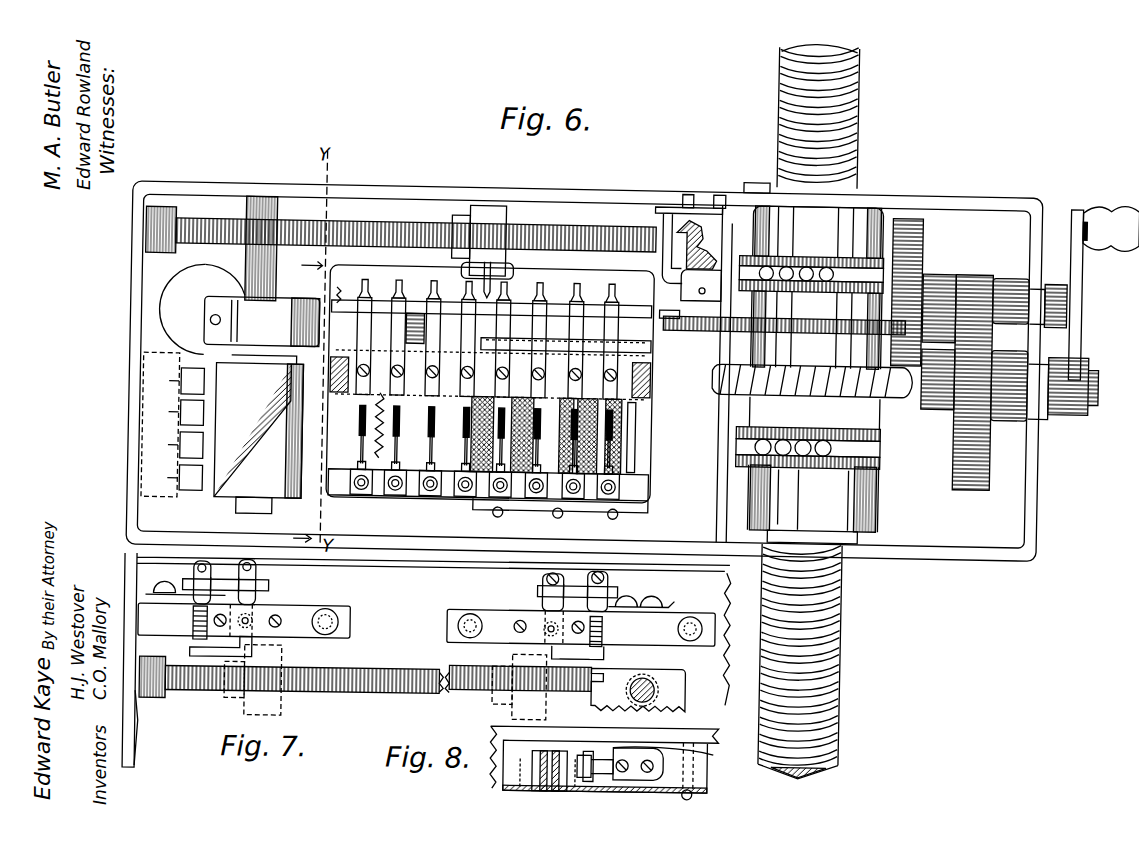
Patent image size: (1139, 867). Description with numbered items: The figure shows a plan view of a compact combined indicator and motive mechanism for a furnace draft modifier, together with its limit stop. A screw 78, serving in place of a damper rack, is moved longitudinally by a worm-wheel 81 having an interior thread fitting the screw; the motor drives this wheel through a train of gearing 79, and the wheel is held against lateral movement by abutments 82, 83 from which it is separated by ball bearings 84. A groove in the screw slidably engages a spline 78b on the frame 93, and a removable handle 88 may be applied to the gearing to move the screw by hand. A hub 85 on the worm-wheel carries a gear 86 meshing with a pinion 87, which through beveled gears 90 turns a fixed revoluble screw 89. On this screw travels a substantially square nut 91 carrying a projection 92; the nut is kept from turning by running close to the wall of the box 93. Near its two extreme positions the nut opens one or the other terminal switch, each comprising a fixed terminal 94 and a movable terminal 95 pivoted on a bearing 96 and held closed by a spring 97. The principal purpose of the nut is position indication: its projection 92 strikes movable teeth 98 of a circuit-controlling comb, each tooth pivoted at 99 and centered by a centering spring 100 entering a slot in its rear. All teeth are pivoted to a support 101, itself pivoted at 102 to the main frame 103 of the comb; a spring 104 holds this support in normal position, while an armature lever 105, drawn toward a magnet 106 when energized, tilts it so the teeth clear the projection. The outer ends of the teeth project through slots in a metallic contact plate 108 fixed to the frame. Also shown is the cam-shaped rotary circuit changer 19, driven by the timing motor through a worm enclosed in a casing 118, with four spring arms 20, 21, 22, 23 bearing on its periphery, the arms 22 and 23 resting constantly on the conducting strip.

In FIG. 6, the rotary circuit changer 19 is at (259, 435).
In FIG. 6, the spring arm 20 is at (210, 487).
In FIG. 6, the spring arm 21 is at (148, 460).
In FIG. 6, the spring arm 22 is at (148, 426).
In FIG. 6, the spring arm 23 is at (142, 357).
In FIG. 6, the screw 78 is at (848, 138).
In FIG. 6, the spline 78b is at (746, 179).
In FIG. 6, the train of gearing 79 is at (924, 252).
In FIG. 6, the worm-wheel 81 is at (713, 390).
In FIG. 6, the abutment 82 is at (870, 260).
In FIG. 6, the abutment 83 is at (874, 460).
In FIG. 6, the ball bearings 84 is at (766, 268).
In FIG. 6, the hub 85 is at (815, 375).
In FIG. 6, the gear 86 is at (754, 318).
In FIG. 6, the pinion 87 is at (664, 305).
In FIG. 6, the removable handle 88 is at (1078, 331).
In FIG. 6, the fixed revoluble screw 89 is at (565, 216).
In FIG. 7, the fixed revoluble screw 89 is at (354, 692).
In FIG. 6, the beveled gears 90 is at (690, 234).
In FIG. 6, the nut 91 is at (490, 212).
In FIG. 7, the nut 91 is at (280, 660).
In FIG. 6, the projection 92 is at (487, 287).
In FIG. 6, the frame 93 is at (405, 195).
In FIG. 7, the fixed terminal 94 is at (180, 581).
In FIG. 8, the fixed terminal 94 is at (696, 755).
In FIG. 7, the movable terminal 95 is at (262, 570).
In FIG. 8, the bearing 96 is at (535, 772).
In FIG. 7, the spring 97 is at (192, 642).
In FIG. 6, the movable teeth 98 is at (400, 300).
In FIG. 6, the pivot 99 is at (363, 370).
In FIG. 6, the centering spring 100 is at (428, 446).
In FIG. 6, the support 101 is at (626, 420).
In FIG. 6, the pivot 102 is at (622, 390).
In FIG. 6, the main frame 103 is at (336, 429).
In FIG. 6, the spring 104 is at (358, 453).
In FIG. 6, the armature lever 105 is at (490, 334).
In FIG. 6, the magnet 106 is at (456, 444).
In FIG. 6, the metallic contact plate 108 is at (350, 305).
In FIG. 6, the casing 118 is at (240, 310).